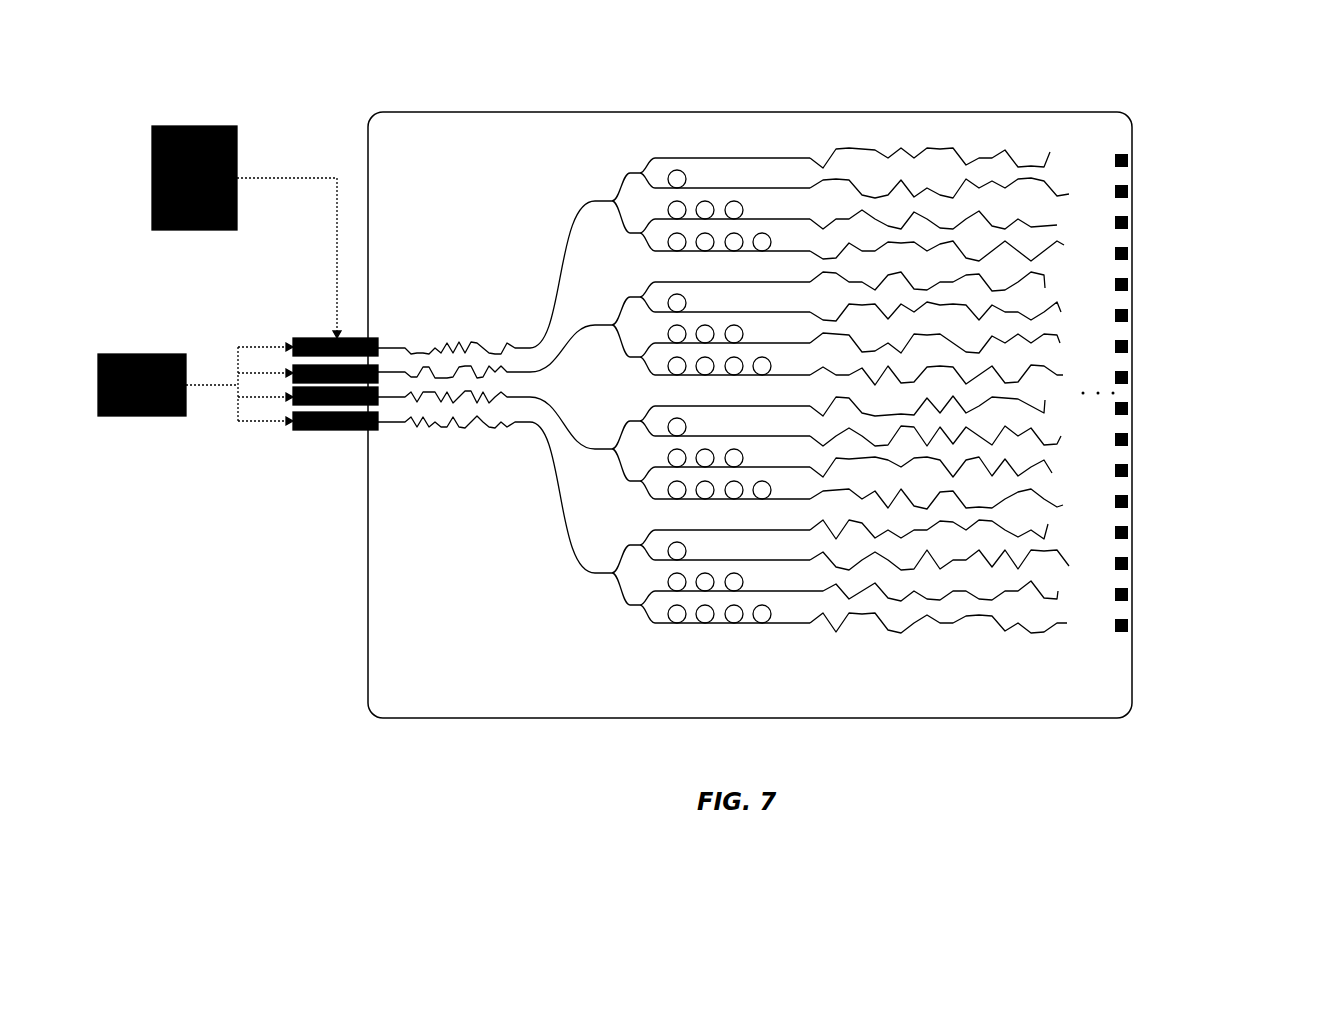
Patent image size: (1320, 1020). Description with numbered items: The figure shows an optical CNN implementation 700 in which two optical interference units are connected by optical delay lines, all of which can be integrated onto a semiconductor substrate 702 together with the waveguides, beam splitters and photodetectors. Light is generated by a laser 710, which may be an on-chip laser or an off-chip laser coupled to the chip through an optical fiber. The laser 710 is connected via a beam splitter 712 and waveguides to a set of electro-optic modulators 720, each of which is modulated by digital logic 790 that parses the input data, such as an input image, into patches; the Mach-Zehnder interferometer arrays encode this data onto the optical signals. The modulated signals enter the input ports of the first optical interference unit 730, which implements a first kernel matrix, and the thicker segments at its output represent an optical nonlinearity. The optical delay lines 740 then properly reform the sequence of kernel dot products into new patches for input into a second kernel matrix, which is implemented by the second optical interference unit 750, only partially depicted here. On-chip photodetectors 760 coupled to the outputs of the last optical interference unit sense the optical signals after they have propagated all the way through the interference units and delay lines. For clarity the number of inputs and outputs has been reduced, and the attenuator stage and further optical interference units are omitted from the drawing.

The optical CNN implementation 700 is at (1180, 97).
The semiconductor substrate 702 is at (442, 156).
The laser 710 is at (142, 407).
The beam splitter 712 is at (239, 404).
The electro-optic modulators 720 is at (335, 407).
The first optical interference unit 730 is at (486, 479).
The optical delay lines 740 is at (702, 458).
The second optical interference unit 750 is at (939, 453).
The on-chip photodetectors 760 is at (1171, 420).
The digital logic 790 is at (246, 232).